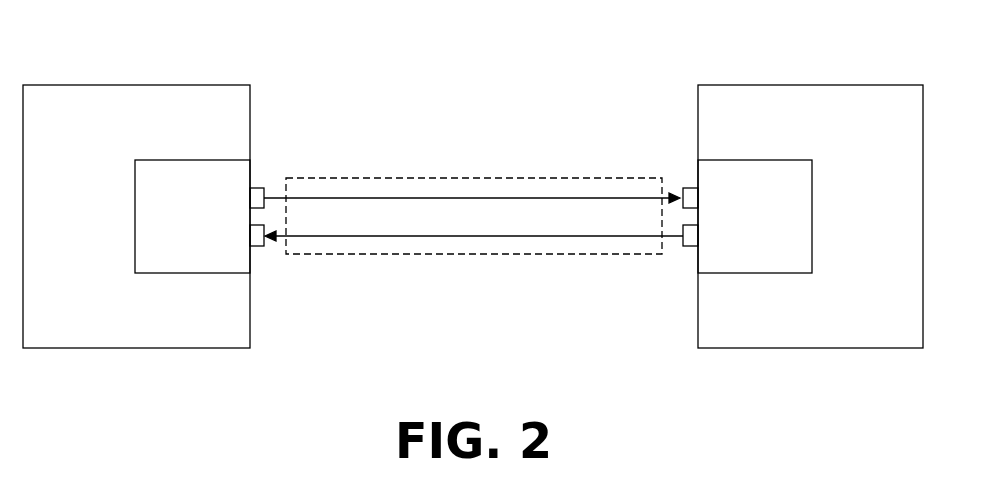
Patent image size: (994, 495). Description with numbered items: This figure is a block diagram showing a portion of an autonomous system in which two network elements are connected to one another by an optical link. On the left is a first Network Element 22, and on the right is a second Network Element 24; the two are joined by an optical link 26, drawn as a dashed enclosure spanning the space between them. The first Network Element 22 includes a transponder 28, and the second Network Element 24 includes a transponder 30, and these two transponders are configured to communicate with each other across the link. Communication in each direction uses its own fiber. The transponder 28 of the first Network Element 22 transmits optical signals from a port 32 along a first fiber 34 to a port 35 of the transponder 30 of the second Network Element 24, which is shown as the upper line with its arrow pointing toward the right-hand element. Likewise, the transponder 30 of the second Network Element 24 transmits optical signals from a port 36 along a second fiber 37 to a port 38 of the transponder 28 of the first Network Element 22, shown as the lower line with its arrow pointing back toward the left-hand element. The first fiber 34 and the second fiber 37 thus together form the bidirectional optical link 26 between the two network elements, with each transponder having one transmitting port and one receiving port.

The first Network Element 22 is at (125, 85).
The second Network Element 24 is at (803, 85).
The optical link 26 is at (473, 254).
The transponder 28 is at (132, 227).
The transponder 30 is at (812, 217).
The port 32 is at (262, 188).
The first fiber 34 is at (395, 198).
The port 35 is at (690, 188).
The port 36 is at (690, 247).
The second fiber 37 is at (527, 236).
The port 38 is at (257, 247).